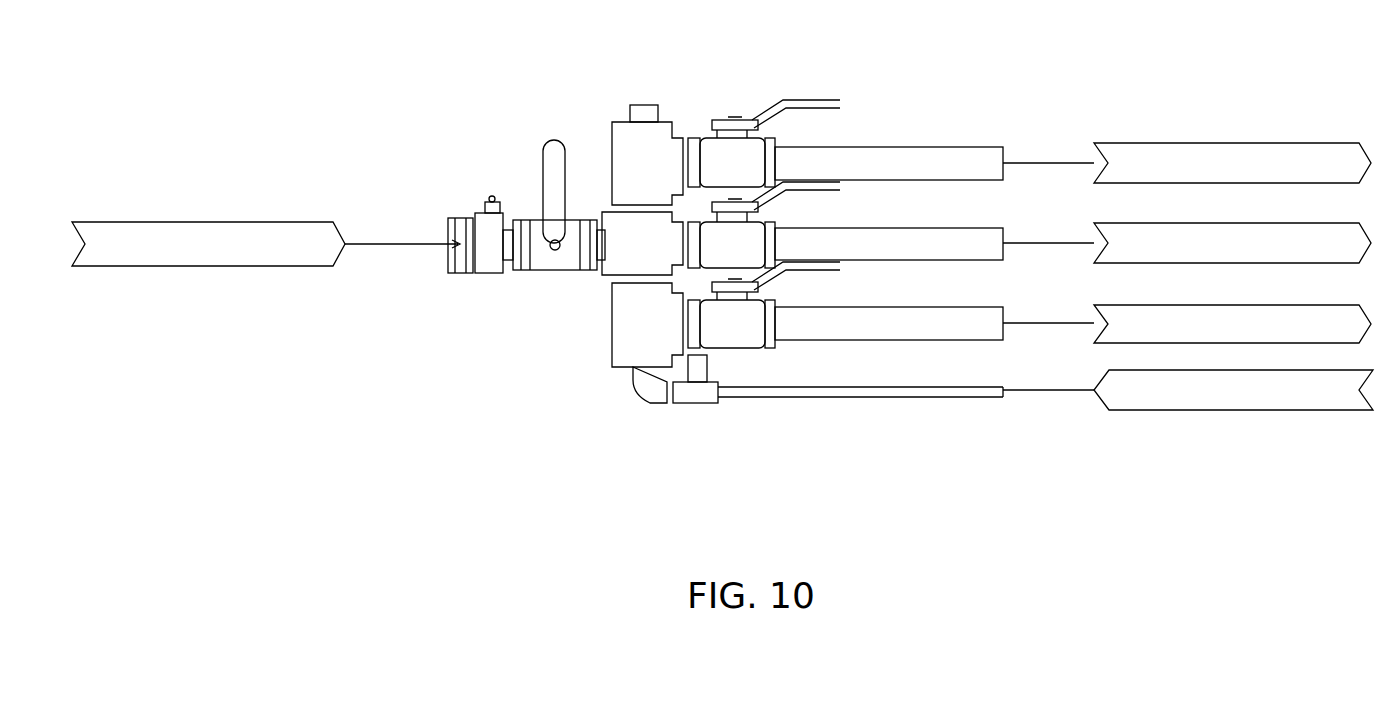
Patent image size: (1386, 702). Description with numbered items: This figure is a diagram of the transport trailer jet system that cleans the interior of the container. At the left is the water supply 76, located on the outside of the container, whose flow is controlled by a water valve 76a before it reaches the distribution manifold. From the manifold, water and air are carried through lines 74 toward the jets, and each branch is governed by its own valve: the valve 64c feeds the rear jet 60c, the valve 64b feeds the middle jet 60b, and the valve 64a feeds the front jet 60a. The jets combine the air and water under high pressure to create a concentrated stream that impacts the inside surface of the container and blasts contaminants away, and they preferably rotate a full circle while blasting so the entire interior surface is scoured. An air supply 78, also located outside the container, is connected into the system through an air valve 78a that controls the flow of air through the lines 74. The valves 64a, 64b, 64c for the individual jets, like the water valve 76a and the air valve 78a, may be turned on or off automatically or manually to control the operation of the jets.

The water supply 76 is at (266, 244).
The water valve 76a is at (525, 220).
The valve 64c is at (845, 143).
The valve 64b is at (845, 225).
The valve 64a is at (845, 305).
The lines 74 is at (1068, 243).
The rear jet 60c is at (1232, 163).
The middle jet 60b is at (1232, 243).
The front jet 60a is at (1232, 324).
The air supply 78 is at (1045, 390).
The air valve 78a is at (697, 403).